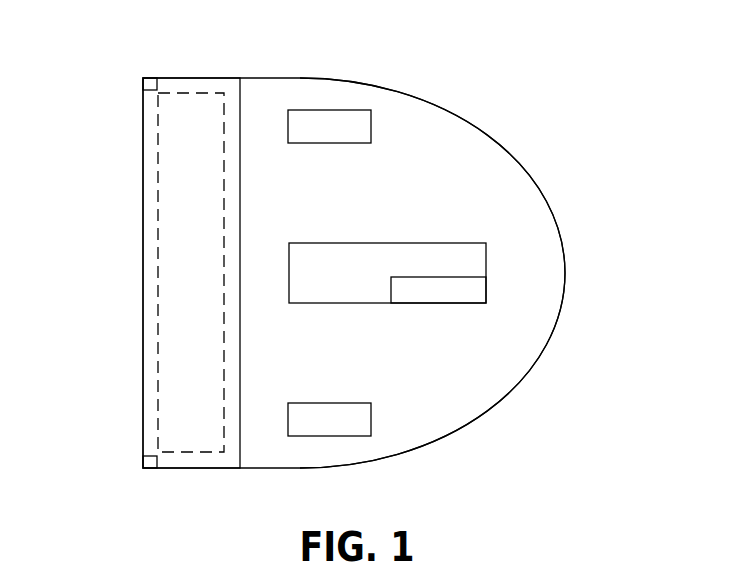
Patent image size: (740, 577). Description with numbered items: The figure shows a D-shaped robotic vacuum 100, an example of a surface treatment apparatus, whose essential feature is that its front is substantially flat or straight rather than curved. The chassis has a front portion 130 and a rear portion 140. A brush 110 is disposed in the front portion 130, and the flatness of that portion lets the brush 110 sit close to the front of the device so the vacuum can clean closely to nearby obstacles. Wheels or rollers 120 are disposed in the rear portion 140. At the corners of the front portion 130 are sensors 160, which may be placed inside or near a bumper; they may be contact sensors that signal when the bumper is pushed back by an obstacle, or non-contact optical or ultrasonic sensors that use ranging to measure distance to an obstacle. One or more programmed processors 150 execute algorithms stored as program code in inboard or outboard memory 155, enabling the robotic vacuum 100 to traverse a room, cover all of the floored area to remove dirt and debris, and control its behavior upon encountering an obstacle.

The robotic vacuum 100 is at (515, 128).
The brush 110 is at (172, 120).
The wheels or rollers 120 is at (313, 120).
The front portion 130 is at (152, 330).
The rear portion 140 is at (552, 265).
The processors 150 is at (486, 243).
The memory 155 is at (486, 290).
The sensors 160 is at (148, 83).